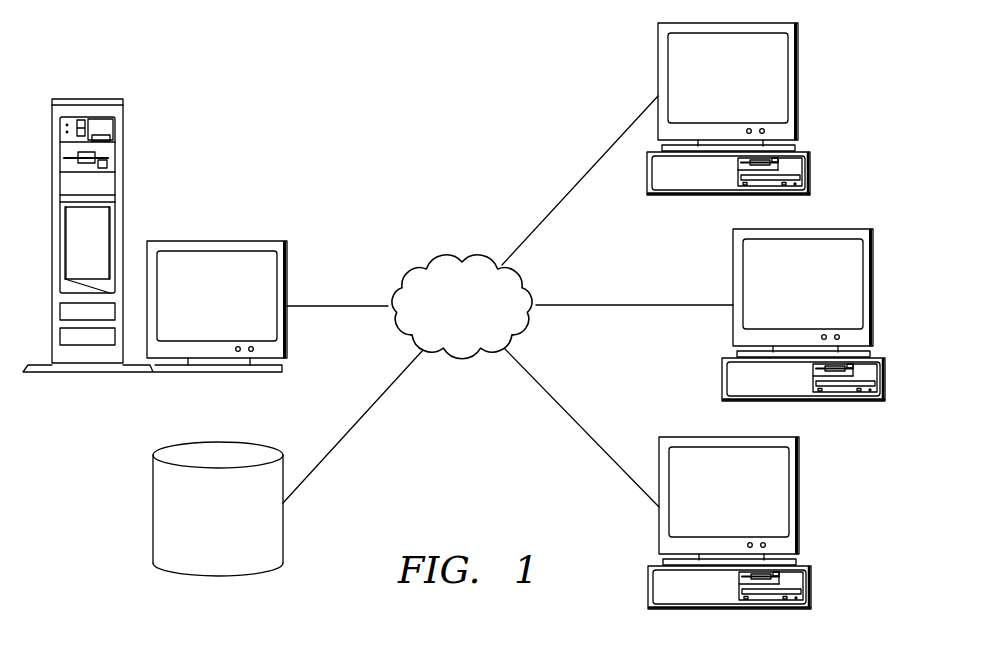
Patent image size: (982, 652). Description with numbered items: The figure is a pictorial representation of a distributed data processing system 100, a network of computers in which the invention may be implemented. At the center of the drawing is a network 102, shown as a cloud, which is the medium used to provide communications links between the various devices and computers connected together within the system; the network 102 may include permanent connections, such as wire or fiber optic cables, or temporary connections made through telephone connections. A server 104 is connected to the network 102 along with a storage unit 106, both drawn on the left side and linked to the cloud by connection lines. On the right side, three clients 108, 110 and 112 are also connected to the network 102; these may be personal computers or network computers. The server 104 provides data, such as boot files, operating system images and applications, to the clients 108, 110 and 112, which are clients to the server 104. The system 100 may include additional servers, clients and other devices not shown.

The distributed data processing system 100 is at (352, 68).
The network 102 is at (482, 334).
The server 104 is at (198, 309).
The storage unit 106 is at (238, 530).
The client 108 is at (708, 92).
The client 110 is at (786, 297).
The client 112 is at (712, 506).